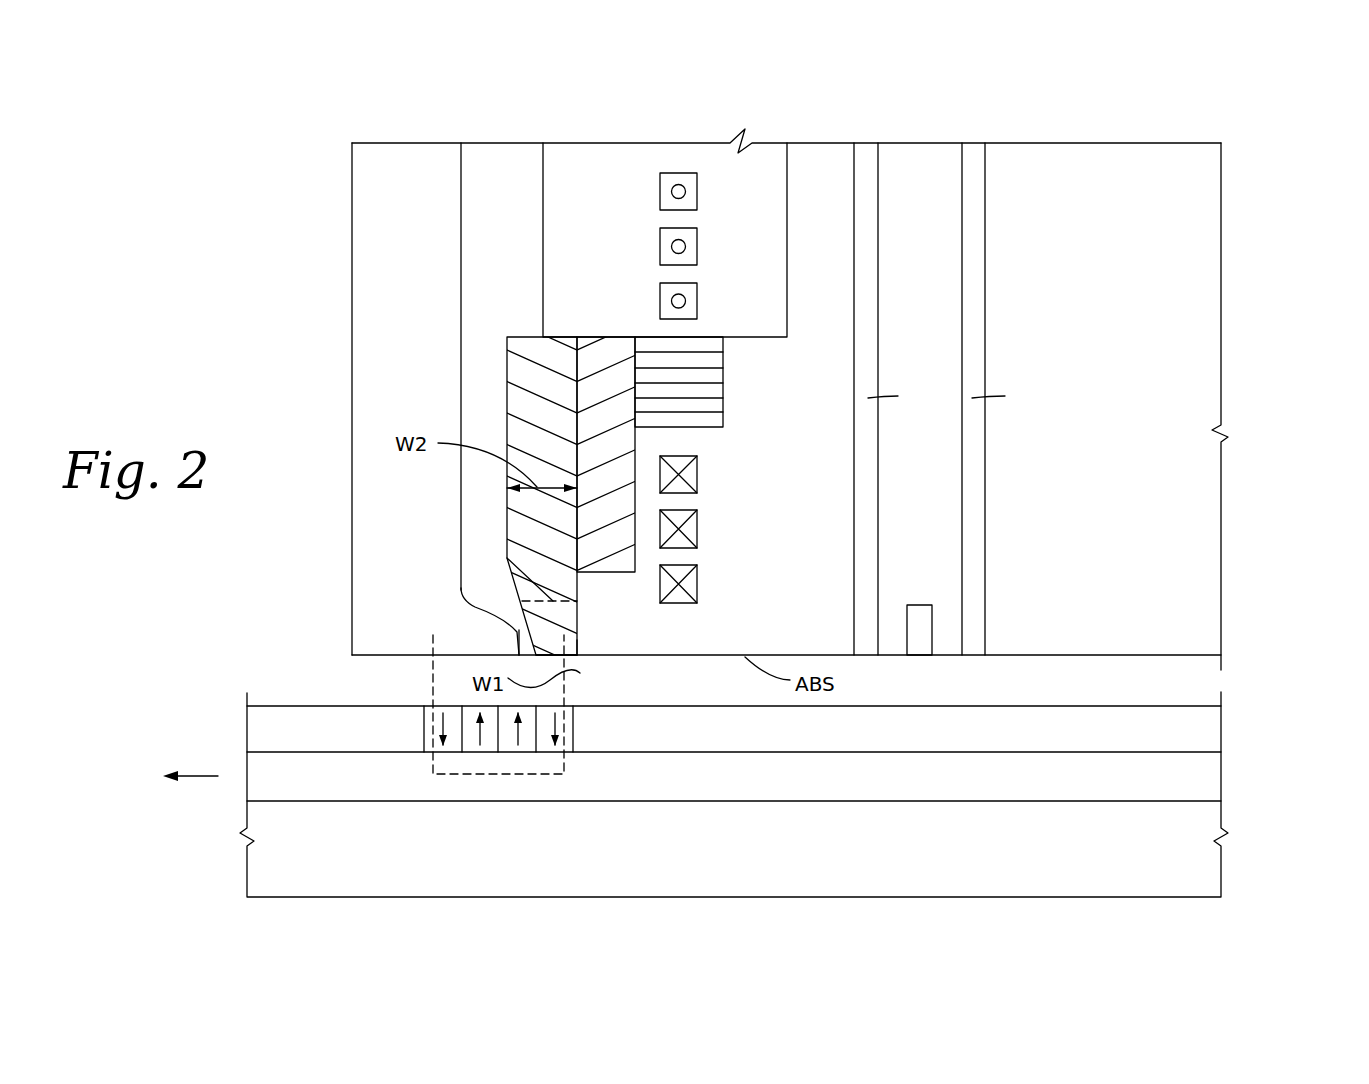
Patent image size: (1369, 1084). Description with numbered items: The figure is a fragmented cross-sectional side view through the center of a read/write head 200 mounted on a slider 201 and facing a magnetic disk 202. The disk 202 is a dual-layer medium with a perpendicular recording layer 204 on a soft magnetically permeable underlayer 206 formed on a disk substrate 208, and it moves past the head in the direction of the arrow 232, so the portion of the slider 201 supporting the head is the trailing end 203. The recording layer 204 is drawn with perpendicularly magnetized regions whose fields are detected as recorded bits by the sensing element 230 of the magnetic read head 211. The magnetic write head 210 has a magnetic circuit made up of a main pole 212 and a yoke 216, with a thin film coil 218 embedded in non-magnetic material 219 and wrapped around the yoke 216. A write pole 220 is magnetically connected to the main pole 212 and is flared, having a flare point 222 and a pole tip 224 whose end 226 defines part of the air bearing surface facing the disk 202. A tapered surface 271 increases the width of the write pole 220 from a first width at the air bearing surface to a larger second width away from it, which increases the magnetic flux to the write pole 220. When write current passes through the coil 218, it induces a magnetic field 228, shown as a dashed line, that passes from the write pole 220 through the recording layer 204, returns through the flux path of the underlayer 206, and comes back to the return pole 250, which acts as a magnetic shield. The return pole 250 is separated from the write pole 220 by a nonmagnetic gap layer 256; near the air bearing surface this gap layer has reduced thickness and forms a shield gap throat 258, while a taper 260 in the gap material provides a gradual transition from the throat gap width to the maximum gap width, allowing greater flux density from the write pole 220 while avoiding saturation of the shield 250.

The read/write head 200 is at (203, 133).
The slider 201 is at (1210, 253).
The magnetic disk 202 is at (1252, 824).
The trailing end 203 is at (320, 372).
The recording layer 204 is at (1208, 733).
The underlayer 206 is at (1208, 778).
The disk substrate 208 is at (1208, 867).
The magnetic write head 210 is at (798, 122).
The magnetic read head 211 is at (993, 122).
The main pole 212 is at (597, 347).
The yoke 216 is at (718, 337).
The thin film coil 218 is at (705, 163).
The non-magnetic material 219 is at (632, 239).
The write pole 220 is at (522, 347).
The flare point 222 is at (507, 558).
The pole tip 224 is at (575, 618).
The end of the write pole 226 is at (577, 655).
The magnetic field 228 is at (432, 681).
The sensing element 230 is at (916, 610).
The arrow 232 is at (200, 776).
The return pole 250 is at (353, 243).
The nonmagnetic gap layer 256 is at (468, 381).
The shield gap throat 258 is at (522, 638).
The taper 260 is at (462, 598).
The tapered surface 271 is at (520, 600).